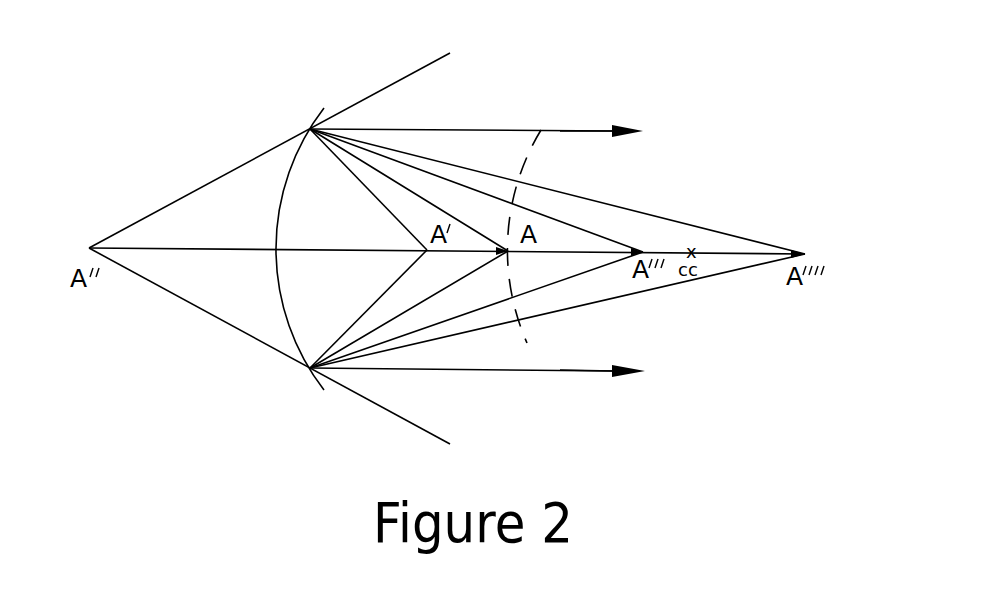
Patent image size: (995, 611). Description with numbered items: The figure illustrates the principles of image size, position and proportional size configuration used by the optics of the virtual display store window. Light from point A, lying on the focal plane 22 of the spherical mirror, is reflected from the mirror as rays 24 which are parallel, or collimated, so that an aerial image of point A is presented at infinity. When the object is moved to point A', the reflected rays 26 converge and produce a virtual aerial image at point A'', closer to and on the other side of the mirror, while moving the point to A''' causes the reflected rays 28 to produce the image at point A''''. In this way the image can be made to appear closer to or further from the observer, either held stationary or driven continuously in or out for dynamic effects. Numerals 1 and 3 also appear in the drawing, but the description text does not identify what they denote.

The parallel light beam 1 is at (614, 252).
The convergent light beam 3 is at (476, 248).
The focal plane 22 is at (533, 353).
The rays 24 is at (588, 131).
The reflected rays 26 is at (382, 90).
The reflected rays 28 is at (753, 238).